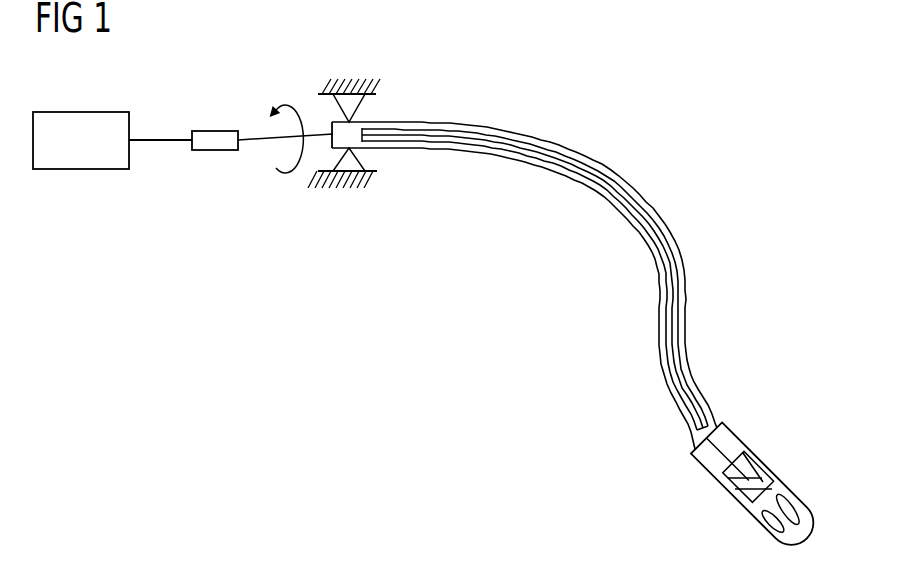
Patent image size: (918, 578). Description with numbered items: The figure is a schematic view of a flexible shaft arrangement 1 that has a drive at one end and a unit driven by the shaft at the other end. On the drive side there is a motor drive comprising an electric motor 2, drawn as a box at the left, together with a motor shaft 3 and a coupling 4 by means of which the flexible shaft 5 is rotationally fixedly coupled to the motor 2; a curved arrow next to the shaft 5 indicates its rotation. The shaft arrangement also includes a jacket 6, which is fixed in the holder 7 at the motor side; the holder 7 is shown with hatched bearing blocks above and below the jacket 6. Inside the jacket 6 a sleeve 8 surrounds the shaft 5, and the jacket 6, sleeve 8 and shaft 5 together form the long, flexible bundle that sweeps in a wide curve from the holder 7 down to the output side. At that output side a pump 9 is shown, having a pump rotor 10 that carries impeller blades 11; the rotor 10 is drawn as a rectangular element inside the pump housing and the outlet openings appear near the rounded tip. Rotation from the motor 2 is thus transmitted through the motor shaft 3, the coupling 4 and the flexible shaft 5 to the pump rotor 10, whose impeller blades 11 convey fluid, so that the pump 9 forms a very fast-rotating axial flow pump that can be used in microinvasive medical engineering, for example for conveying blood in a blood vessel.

The shaft arrangement 1 is at (524, 260).
The electric motor 2 is at (79, 160).
The motor shaft 3 is at (155, 142).
The coupling 4 is at (208, 143).
The flexible shaft 5 is at (318, 128).
The jacket 6 is at (362, 114).
The holder 7 is at (353, 88).
The sleeve 8 is at (473, 132).
The pump 9 is at (748, 483).
The pump rotor 10 is at (765, 457).
The impeller blades 11 is at (767, 468).